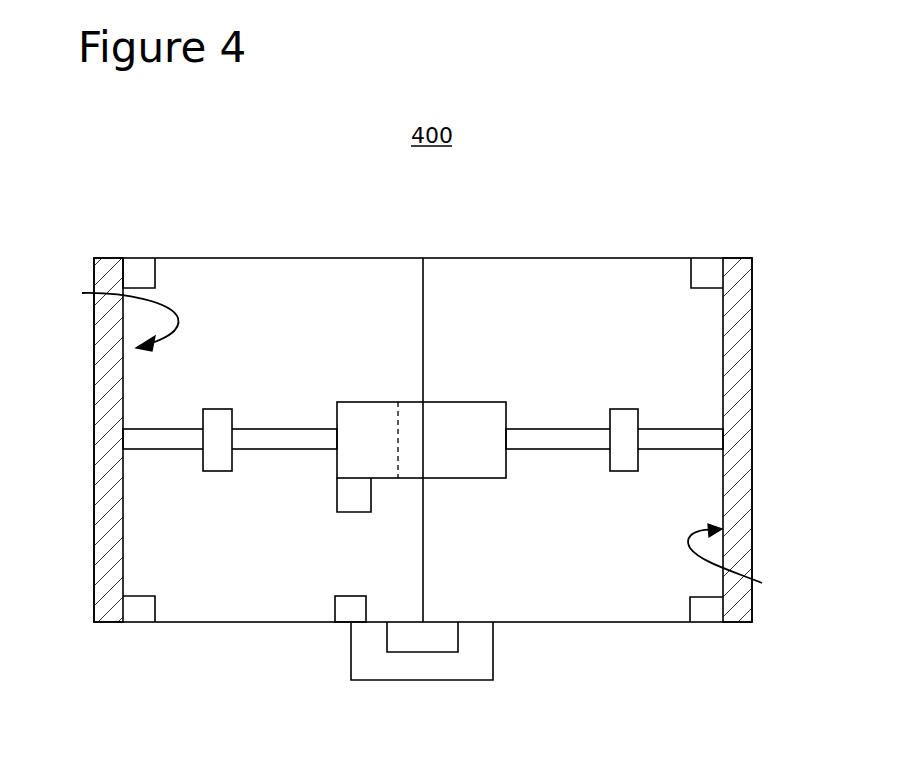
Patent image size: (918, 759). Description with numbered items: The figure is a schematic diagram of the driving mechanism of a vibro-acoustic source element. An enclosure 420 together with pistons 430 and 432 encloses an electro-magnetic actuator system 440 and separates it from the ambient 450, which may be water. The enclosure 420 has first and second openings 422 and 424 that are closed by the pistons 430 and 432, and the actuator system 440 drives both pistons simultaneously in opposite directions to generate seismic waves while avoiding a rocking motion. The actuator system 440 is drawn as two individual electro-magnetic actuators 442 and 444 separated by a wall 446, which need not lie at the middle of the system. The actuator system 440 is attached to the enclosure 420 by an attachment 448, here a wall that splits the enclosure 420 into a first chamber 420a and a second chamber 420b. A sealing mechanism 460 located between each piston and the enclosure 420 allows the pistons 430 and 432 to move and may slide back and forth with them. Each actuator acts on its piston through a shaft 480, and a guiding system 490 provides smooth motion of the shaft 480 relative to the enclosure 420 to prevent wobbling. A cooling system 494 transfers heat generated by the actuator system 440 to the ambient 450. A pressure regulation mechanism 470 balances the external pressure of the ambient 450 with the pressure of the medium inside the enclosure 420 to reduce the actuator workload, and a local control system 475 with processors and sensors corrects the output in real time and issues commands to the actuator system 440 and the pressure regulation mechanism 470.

The enclosure 420 is at (213, 258).
The first chamber 420a is at (192, 588).
The second chamber 420b is at (606, 597).
The first opening 422 is at (108, 315).
The second opening 424 is at (750, 562).
The piston 430 is at (94, 349).
The piston 432 is at (735, 318).
The electro-magnetic actuator system 440 is at (459, 402).
The electro-magnetic actuator 442 is at (360, 422).
The electro-magnetic actuator 444 is at (478, 418).
The wall 446 is at (397, 428).
The attachment 448 is at (425, 302).
The ambient 450 is at (762, 460).
The sealing mechanism 460 is at (135, 275).
The pressure regulation mechanism 470 is at (430, 642).
The local control system 475 is at (366, 670).
The shaft 480 is at (268, 450).
The guiding system 490 is at (214, 410).
The cooling system 494 is at (352, 512).